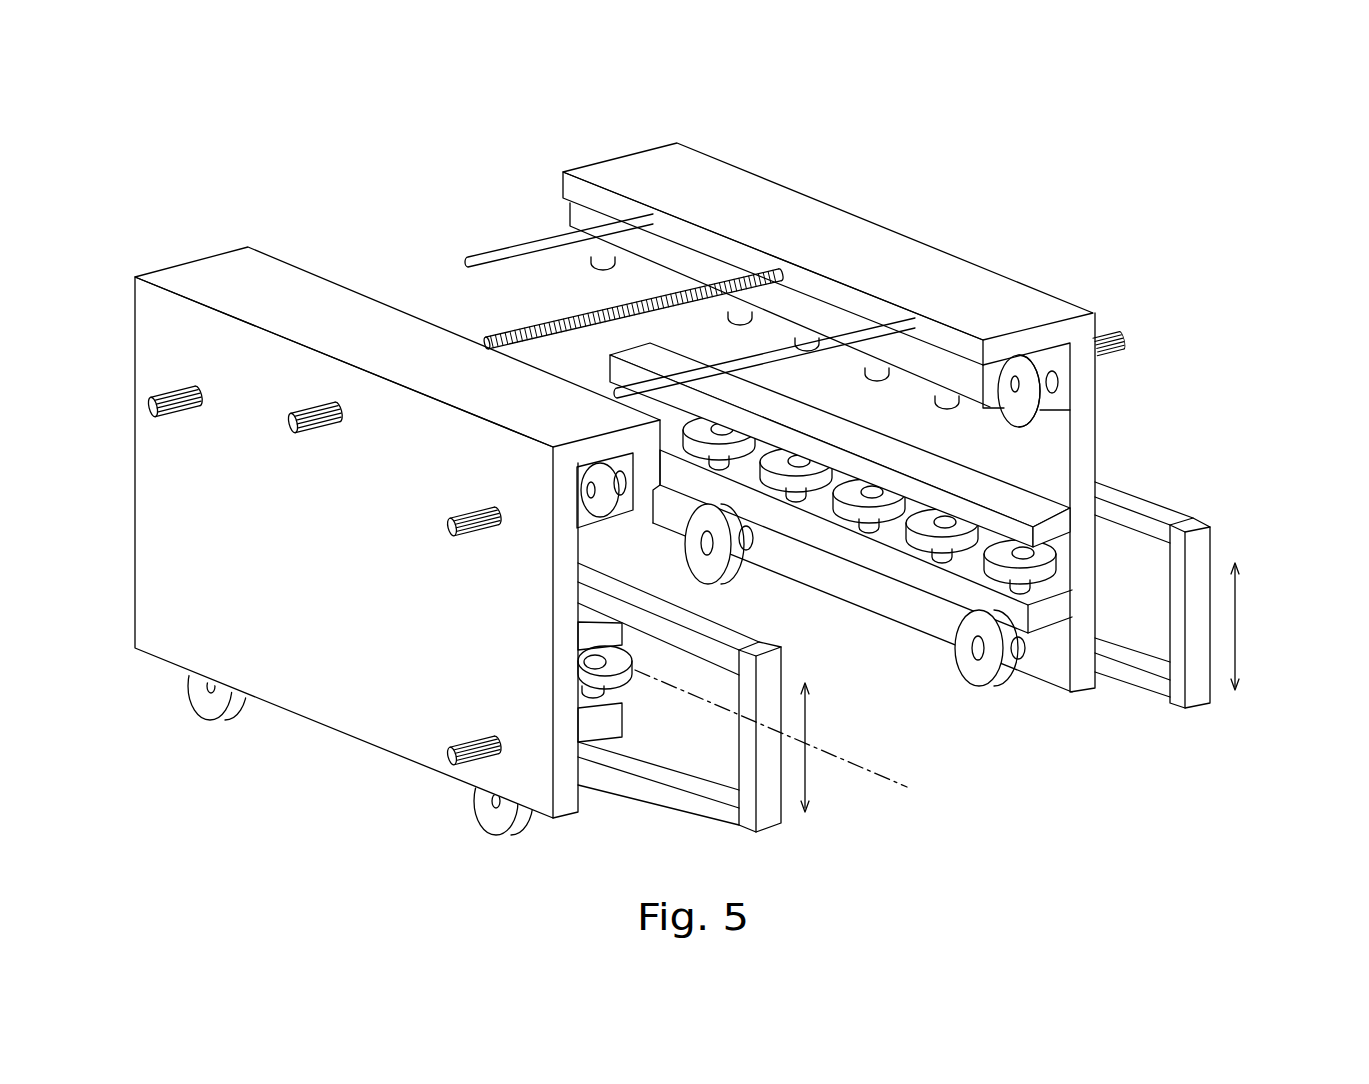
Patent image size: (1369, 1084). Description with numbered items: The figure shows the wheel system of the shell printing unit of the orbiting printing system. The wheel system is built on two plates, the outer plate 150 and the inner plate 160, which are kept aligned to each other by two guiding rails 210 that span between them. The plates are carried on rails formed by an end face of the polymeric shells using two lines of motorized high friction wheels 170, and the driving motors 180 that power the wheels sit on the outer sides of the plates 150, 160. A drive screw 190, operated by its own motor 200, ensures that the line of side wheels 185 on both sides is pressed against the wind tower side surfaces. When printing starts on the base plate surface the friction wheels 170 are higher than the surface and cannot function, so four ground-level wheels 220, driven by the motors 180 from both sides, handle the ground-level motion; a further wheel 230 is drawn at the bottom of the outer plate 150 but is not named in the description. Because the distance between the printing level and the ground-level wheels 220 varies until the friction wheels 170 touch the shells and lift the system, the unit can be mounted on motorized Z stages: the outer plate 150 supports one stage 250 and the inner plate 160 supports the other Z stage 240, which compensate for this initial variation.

The outer plate 150 is at (206, 272).
The inner plate 160 is at (651, 168).
The motorized high friction wheels 170 is at (1043, 400).
The driving motors 180 is at (1125, 343).
The side wheels 185 is at (623, 680).
The drive screw 190 is at (693, 283).
The motor 200 is at (300, 428).
The guiding rails 210 is at (490, 255).
The ground-level wheels 220 is at (215, 696).
The wheel 230 is at (490, 812).
The Z stage 240 is at (1200, 692).
The Z stage 250 is at (780, 815).